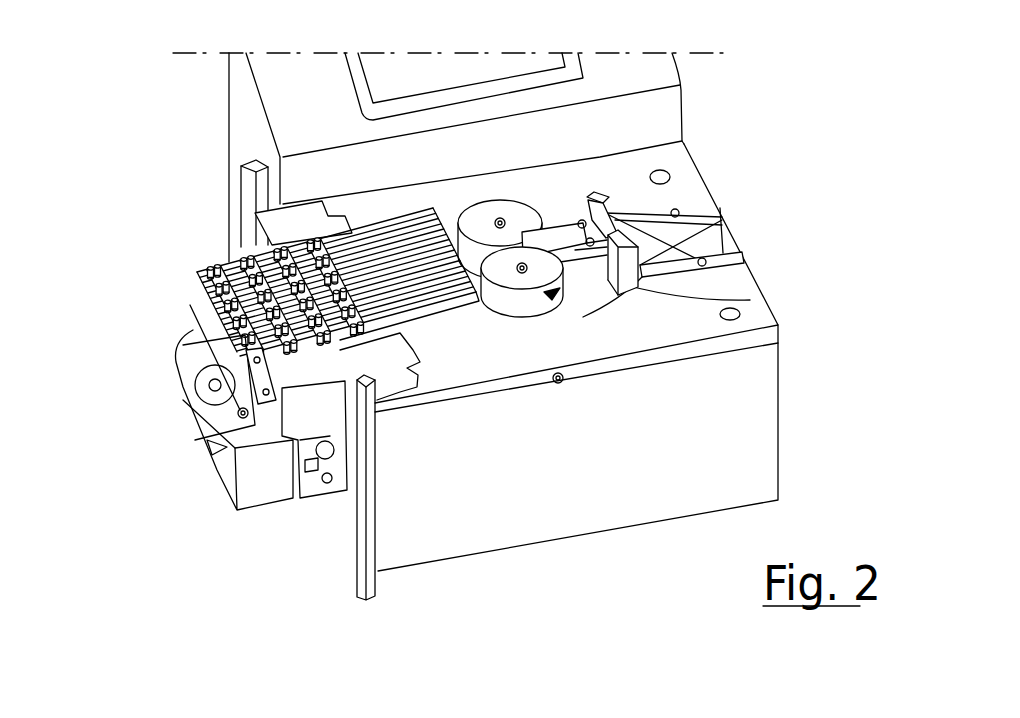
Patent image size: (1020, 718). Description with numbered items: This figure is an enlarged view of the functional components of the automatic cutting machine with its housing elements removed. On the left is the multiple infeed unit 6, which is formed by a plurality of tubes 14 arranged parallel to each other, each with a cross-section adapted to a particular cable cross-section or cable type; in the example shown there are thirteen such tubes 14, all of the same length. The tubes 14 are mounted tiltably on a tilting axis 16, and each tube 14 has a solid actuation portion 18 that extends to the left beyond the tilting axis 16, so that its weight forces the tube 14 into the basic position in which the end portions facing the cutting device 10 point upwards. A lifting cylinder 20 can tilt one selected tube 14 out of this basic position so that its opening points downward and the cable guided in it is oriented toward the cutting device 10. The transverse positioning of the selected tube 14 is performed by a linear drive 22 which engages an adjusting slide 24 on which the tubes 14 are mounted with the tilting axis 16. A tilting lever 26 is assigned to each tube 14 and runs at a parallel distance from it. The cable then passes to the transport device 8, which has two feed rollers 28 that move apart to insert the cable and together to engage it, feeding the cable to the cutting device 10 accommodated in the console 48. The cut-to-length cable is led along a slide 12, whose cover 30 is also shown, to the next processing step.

The multiple infeed unit 6 is at (192, 268).
The transport device 8 is at (750, 300).
The cutting device 10 is at (748, 264).
The slide 12 is at (720, 213).
The tubes 14 is at (433, 315).
The tilting axis 16 is at (250, 390).
The actuation portion 18 is at (250, 408).
The lifting cylinder 20 is at (227, 451).
The linear drive 22 is at (186, 365).
The adjusting slide 24 is at (330, 478).
The tilting lever 26 is at (224, 258).
The feed rollers 28 is at (527, 290).
The cover 30 is at (706, 252).
The console 48 is at (680, 153).